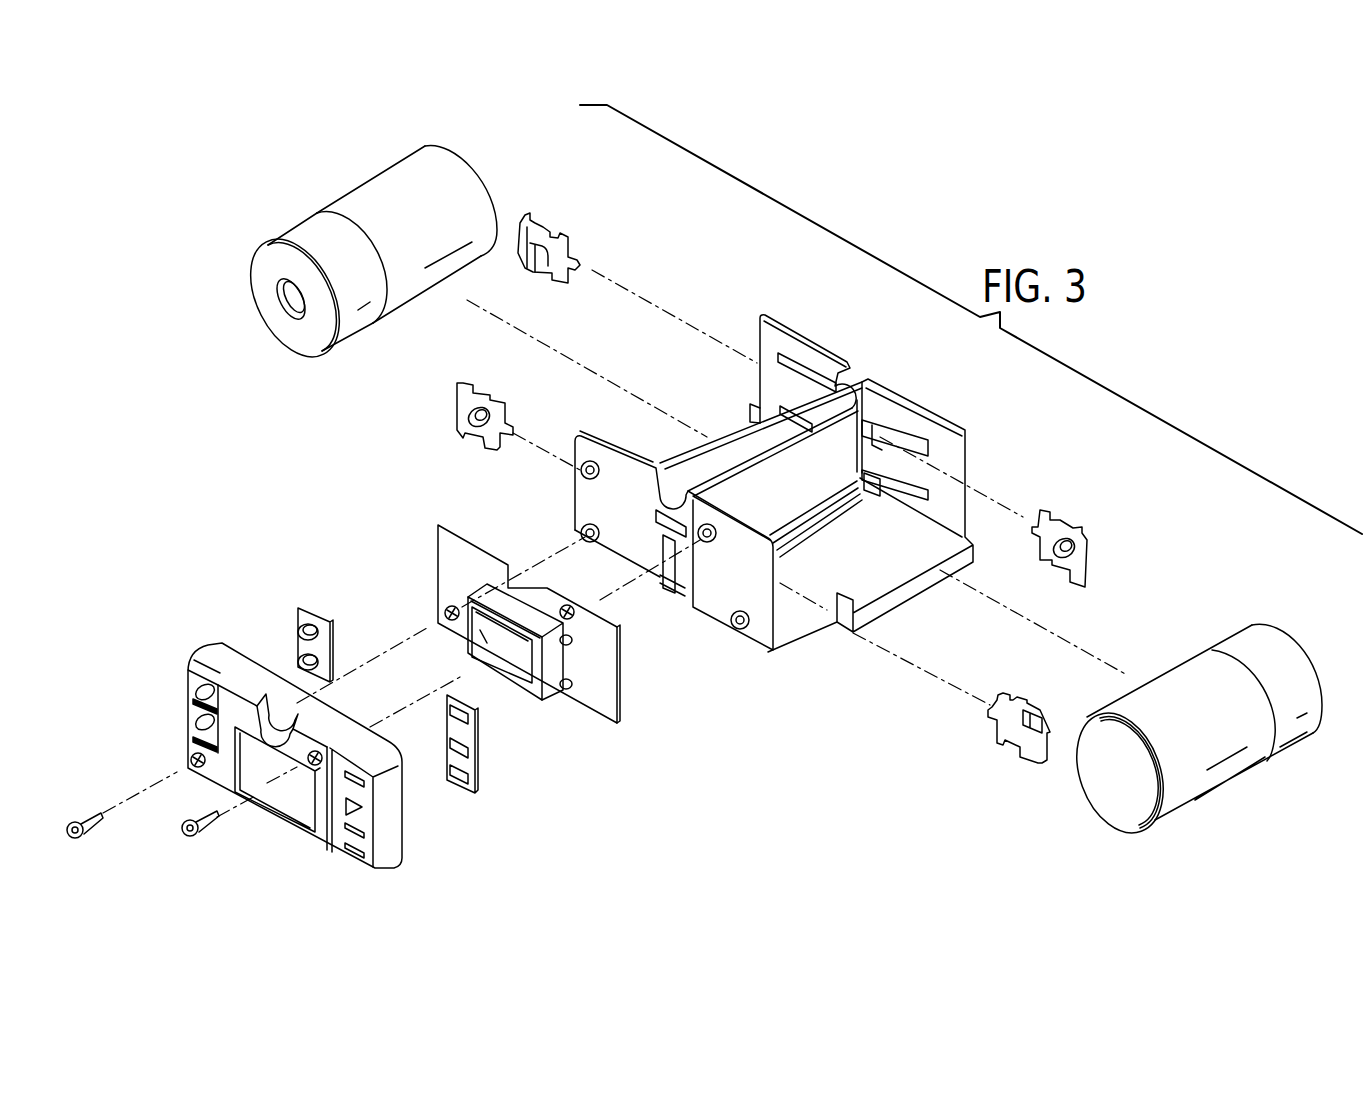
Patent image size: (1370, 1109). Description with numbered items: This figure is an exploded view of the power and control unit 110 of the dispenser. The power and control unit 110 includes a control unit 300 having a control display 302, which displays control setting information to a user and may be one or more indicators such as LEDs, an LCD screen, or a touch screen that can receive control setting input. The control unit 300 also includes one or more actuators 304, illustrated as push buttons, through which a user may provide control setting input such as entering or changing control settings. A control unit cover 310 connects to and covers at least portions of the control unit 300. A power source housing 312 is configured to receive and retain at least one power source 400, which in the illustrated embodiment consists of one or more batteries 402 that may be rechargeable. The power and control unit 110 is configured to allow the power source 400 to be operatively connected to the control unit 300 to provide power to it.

The power and control unit 110 is at (844, 326).
The control unit 300 is at (565, 634).
The control display 302 is at (521, 668).
The actuators 304 is at (298, 619).
The control unit cover 310 is at (322, 836).
The power source housing 312 is at (966, 462).
The power source 400 is at (690, 494).
The batteries 402 is at (250, 279).